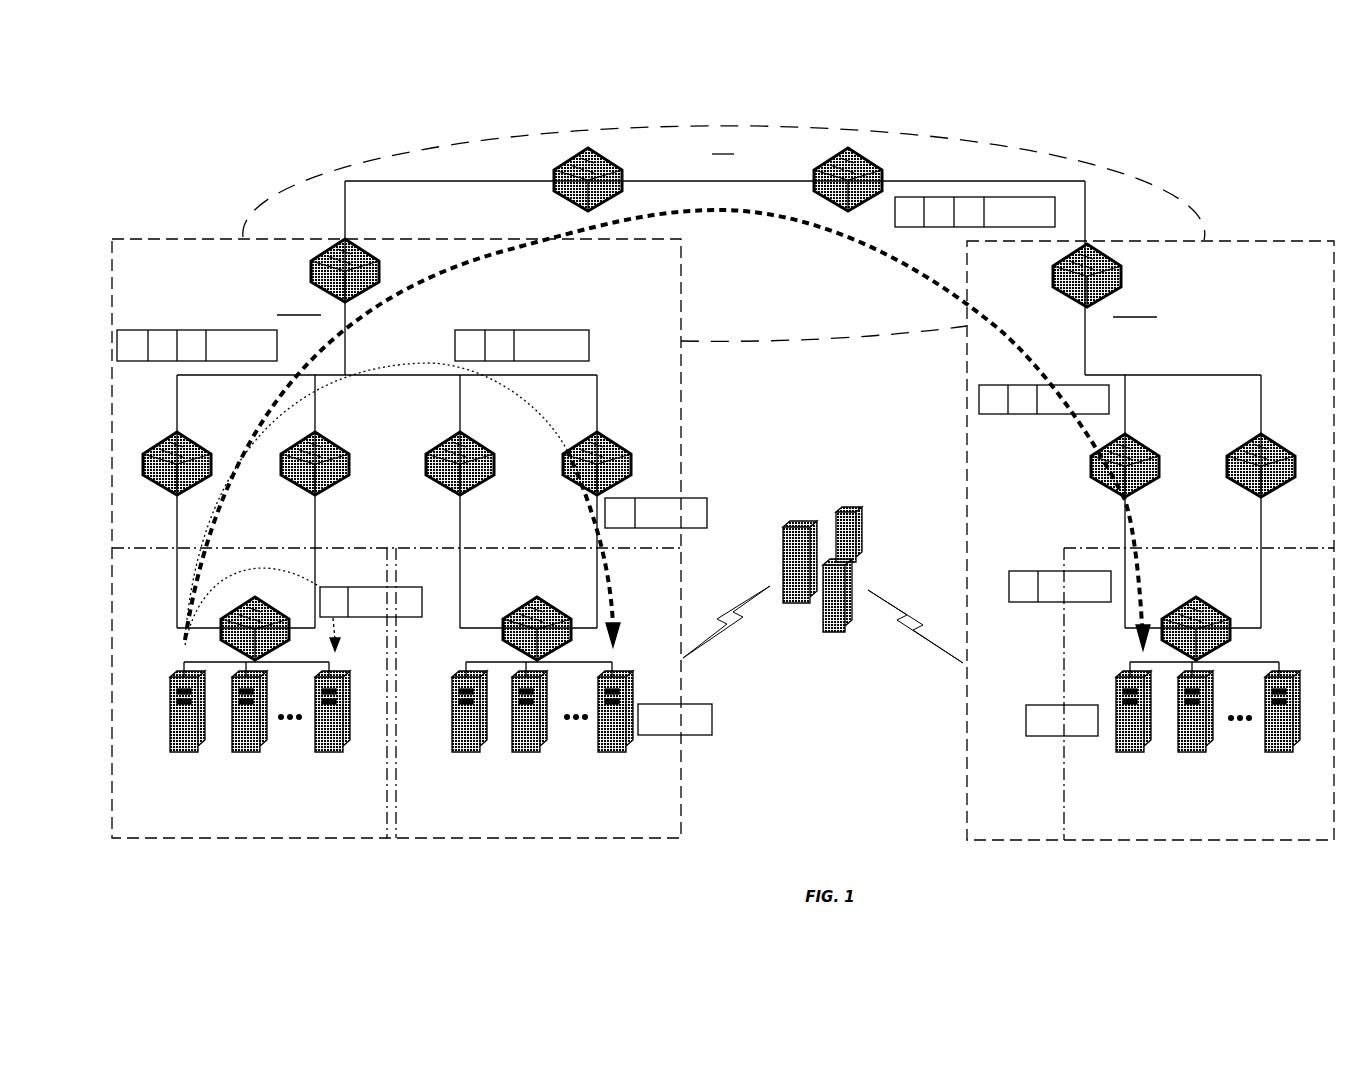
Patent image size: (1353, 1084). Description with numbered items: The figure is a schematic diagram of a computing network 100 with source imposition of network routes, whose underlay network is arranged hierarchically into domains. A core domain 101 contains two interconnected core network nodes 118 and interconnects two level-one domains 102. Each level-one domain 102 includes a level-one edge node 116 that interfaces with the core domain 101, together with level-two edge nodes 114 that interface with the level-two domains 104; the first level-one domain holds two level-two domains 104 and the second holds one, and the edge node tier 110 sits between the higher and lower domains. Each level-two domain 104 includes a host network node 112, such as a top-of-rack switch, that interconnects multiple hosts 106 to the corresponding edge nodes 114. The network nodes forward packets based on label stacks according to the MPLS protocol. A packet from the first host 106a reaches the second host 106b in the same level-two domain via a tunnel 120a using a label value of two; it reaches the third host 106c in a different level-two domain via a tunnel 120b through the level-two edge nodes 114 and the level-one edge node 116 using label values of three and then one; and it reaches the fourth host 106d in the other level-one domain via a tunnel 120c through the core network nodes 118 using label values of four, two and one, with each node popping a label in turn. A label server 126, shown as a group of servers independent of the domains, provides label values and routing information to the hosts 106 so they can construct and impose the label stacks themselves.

The computing network 100 is at (1235, 188).
The core domain 101 is at (1103, 167).
The level-one domains 102 is at (192, 225).
The level-two domains 104 is at (121, 805).
The hosts 106 is at (126, 630).
The first host 106a is at (175, 685).
The second host 106b is at (320, 681).
The third host 106c is at (612, 683).
The fourth host 106d is at (1130, 683).
The second-level edge node tier 110 is at (126, 458).
The host network node 112 is at (240, 605).
The level-two edge nodes 114 is at (131, 549).
The level-one edge nodes 116 is at (286, 339).
The core network nodes 118 is at (553, 180).
The tunnel 120a is at (320, 587).
The tunnel 120b is at (612, 612).
The tunnel 120c is at (900, 266).
The label server 126 is at (802, 688).